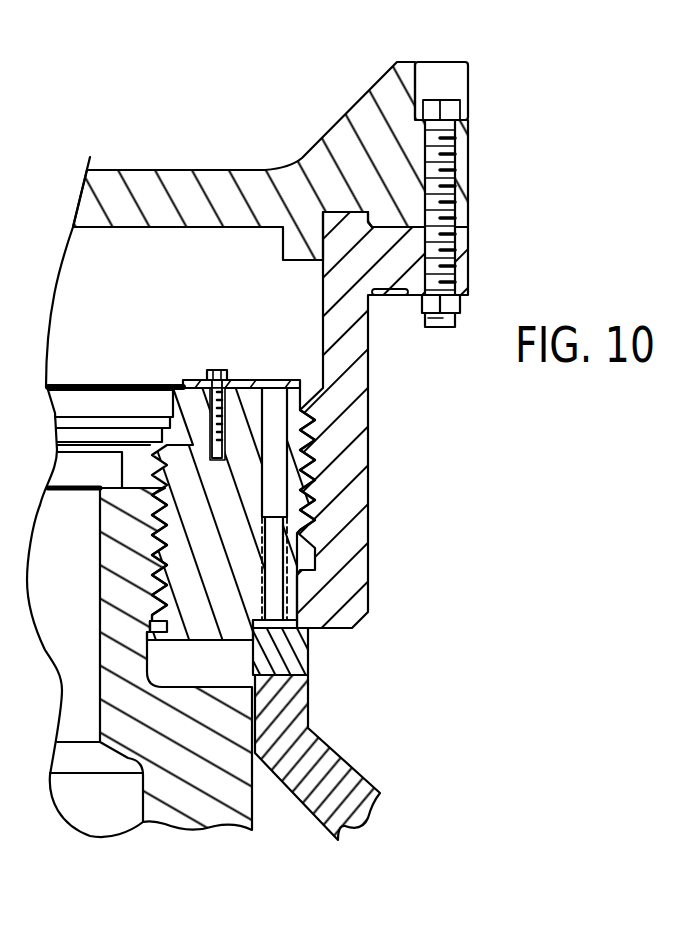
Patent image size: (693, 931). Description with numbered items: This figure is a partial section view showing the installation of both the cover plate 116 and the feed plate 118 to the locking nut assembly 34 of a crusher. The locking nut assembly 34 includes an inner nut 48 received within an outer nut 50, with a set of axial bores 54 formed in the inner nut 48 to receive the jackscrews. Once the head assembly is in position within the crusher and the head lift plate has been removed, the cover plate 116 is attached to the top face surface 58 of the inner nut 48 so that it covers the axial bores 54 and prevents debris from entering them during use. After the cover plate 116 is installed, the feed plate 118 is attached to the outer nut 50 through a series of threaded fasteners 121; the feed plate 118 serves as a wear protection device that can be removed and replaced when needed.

The locking nut assembly 34 is at (457, 425).
The inner nut 48 is at (210, 318).
The outer nut 50 is at (378, 405).
The axial bores 54 is at (275, 384).
The top face surface 58 is at (182, 385).
The cover plate 116 is at (248, 380).
The feed plate 118 is at (491, 194).
The threaded fasteners 121 is at (452, 165).